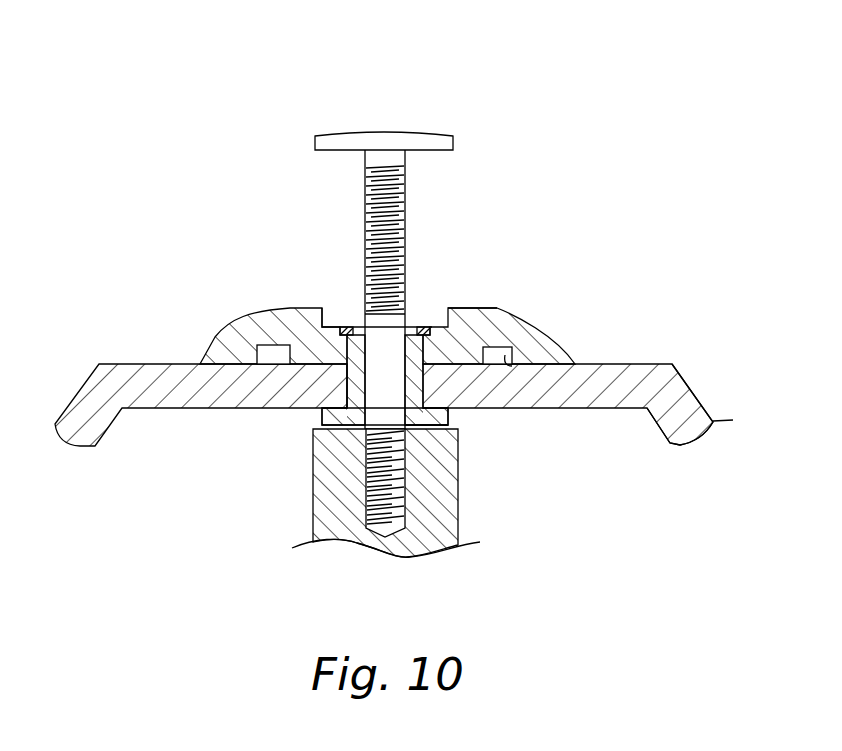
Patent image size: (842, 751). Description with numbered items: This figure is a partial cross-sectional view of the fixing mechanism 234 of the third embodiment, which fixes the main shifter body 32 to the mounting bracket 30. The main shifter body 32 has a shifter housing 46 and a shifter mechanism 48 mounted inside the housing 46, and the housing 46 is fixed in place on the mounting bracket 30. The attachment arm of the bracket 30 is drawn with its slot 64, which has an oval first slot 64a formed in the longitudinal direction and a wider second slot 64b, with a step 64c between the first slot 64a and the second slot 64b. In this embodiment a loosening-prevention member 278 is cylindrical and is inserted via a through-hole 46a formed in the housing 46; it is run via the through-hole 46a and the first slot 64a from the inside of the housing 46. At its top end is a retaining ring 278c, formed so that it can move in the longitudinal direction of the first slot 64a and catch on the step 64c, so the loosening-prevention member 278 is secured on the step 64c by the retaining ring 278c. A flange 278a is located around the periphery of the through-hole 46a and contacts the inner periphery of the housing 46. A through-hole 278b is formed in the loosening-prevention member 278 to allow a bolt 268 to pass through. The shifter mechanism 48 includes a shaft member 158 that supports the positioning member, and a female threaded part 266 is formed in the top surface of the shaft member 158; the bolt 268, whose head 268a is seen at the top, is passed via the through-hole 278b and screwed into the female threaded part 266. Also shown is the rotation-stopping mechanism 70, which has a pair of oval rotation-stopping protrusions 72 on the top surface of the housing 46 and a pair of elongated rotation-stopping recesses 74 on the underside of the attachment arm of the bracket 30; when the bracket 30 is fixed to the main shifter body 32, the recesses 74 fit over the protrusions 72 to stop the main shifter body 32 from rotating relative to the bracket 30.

The mounting bracket 30 is at (208, 327).
The main shifter body 32 is at (703, 382).
The shifter housing 46 is at (500, 382).
The through-hole 46a is at (352, 387).
The shifter mechanism 48 is at (262, 552).
The slot 64 is at (439, 275).
The first slot 64a is at (350, 327).
The second slot 64b is at (323, 308).
The step 64c is at (330, 313).
The rotation-stopping mechanism 70 is at (501, 339).
The rotation-stopping protrusion 72 is at (553, 363).
The rotation-stopping recess 74 is at (512, 367).
The shaft member 158 is at (442, 530).
The fixing mechanism 234 is at (402, 323).
The female threaded part 266 is at (396, 495).
The bolt 268 is at (428, 221).
The screw head 268a is at (422, 140).
The loosening-prevention member 278 is at (462, 398).
The flange 278a is at (455, 412).
The through-hole 278b is at (430, 428).
The retaining ring 278c is at (423, 327).